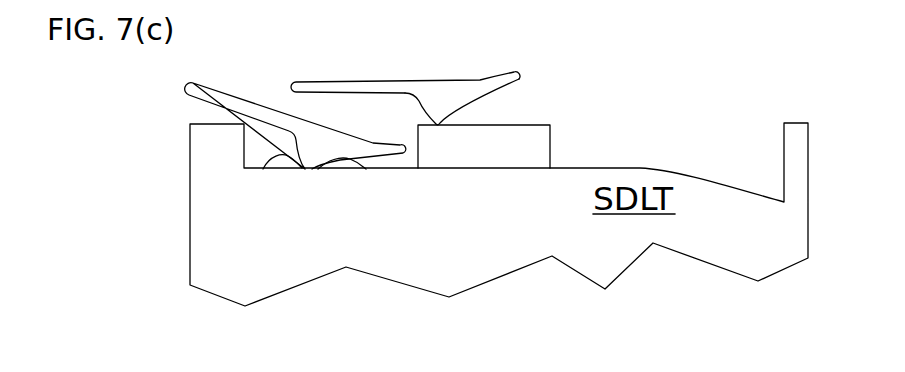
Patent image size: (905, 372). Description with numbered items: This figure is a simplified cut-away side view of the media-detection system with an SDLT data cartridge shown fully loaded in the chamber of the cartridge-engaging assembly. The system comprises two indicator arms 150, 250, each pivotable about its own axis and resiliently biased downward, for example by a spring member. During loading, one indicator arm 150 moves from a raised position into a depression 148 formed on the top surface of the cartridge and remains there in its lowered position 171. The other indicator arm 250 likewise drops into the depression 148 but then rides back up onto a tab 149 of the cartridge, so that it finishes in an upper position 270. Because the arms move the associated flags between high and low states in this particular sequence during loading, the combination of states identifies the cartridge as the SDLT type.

The tab 149 is at (458, 124).
The indicator arm 150 is at (216, 82).
The depression 148 is at (262, 170).
The lower position 171 is at (365, 169).
The indicator arm 250 is at (388, 77).
The upper position 270 is at (423, 111).